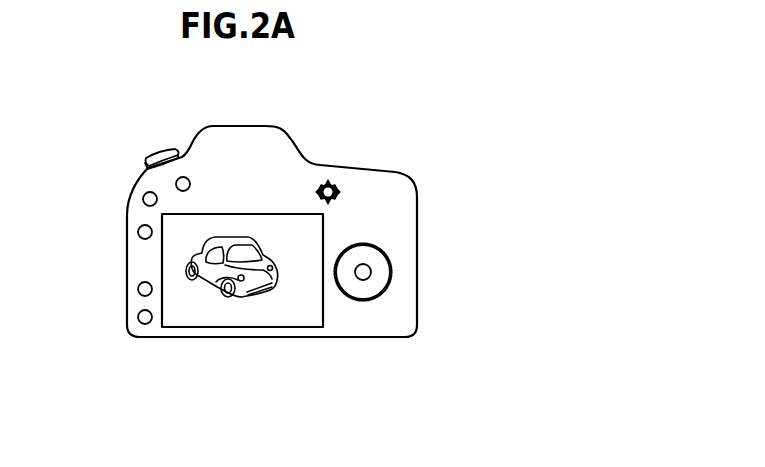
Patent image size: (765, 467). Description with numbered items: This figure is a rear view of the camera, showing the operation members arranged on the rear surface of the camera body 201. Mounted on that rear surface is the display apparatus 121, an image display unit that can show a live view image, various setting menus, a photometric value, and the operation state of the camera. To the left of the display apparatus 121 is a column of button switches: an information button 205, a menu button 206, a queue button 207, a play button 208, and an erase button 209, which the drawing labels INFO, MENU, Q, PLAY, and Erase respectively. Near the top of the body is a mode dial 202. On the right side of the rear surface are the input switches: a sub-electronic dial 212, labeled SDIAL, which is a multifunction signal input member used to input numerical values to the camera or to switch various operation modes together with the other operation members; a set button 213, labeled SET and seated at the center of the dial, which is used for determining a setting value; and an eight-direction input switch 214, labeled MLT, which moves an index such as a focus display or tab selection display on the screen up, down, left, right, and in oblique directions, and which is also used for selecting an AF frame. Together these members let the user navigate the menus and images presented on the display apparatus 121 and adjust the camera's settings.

The camera body 201 is at (241, 126).
The mode dial 202 is at (167, 152).
The information button 205 is at (176, 184).
The menu button 206 is at (143, 199).
The queue button 207 is at (138, 233).
The play button 208 is at (138, 291).
The erase button 209 is at (139, 321).
The display apparatus 121 is at (215, 328).
The sub-electronic dial 212 is at (358, 299).
The set button 213 is at (371, 275).
The eight-direction input switch 214 is at (328, 181).